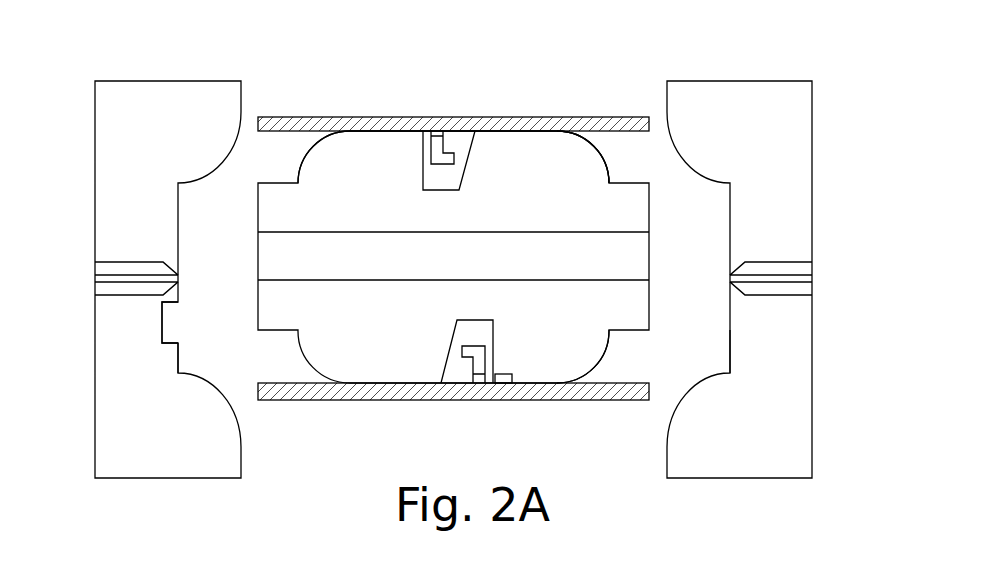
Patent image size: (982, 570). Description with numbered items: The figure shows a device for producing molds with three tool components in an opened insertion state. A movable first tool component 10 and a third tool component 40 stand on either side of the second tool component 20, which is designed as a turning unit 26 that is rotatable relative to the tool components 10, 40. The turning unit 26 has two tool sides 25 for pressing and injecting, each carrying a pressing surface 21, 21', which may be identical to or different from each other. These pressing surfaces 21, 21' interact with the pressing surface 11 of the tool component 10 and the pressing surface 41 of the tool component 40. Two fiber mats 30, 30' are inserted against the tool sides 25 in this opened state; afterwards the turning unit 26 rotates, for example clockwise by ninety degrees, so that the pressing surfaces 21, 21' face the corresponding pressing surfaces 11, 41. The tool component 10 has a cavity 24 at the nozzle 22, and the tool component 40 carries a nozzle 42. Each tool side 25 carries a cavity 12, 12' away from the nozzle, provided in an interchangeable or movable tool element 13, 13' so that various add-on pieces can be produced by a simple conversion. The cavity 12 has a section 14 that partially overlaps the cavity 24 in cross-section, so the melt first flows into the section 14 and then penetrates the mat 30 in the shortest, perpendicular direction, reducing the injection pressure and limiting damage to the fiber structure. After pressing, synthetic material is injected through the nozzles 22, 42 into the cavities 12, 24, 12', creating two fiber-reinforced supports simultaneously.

The first tool component 10 is at (146, 92).
The pressing surface 11 is at (178, 343).
The cavity at the nozzle 24 is at (168, 318).
The nozzle 22 is at (103, 288).
The third tool component 40 is at (740, 100).
The pressing surface 41 is at (729, 355).
The nozzle 42 is at (797, 268).
The fiber mat 30' is at (453, 79).
The fiber mat 30 is at (453, 428).
The tool side 25 is at (270, 308).
The turning unit 26 is at (383, 262).
The second tool component 20 is at (533, 140).
The pressing surface 21' is at (629, 157).
The pressing surface 21 is at (623, 358).
The tool element 13' is at (460, 126).
The cavity away from the nozzle 12' is at (428, 111).
The tool element 13 is at (450, 382).
The cavity away from the nozzle 12 is at (484, 402).
The section 14 is at (505, 374).